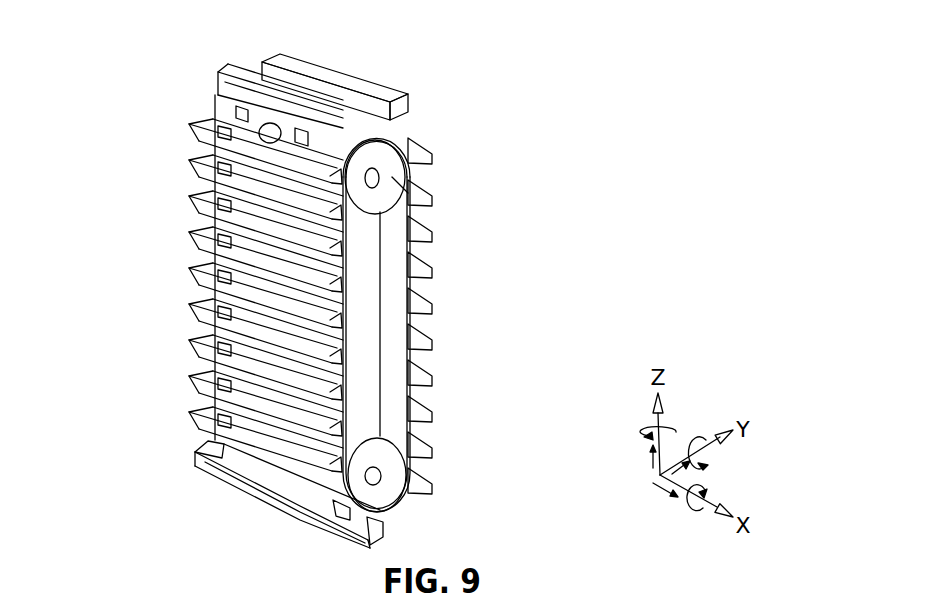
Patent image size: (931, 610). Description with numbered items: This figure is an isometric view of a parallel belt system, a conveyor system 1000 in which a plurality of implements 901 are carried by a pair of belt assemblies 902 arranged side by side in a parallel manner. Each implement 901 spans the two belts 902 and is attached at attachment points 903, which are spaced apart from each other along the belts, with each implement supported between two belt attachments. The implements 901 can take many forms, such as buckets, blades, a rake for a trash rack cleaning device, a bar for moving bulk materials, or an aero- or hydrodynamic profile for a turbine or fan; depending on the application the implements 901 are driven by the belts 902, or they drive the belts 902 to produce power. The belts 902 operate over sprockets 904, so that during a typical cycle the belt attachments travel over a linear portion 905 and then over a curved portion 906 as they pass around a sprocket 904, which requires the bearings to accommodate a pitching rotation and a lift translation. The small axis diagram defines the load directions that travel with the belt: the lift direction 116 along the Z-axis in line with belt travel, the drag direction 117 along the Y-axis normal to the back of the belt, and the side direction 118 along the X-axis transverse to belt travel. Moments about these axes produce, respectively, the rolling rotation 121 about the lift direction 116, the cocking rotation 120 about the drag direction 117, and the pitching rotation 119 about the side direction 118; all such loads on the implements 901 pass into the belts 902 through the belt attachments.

The implement 901 is at (390, 106).
The belt 902 is at (234, 110).
The attachment point 903 is at (327, 243).
The sprocket 904 is at (393, 177).
The linear portion 905 is at (393, 317).
The curved portion 906 is at (406, 143).
The system 1000 is at (275, 603).
The lift direction 116 is at (650, 462).
The drag direction 117 is at (688, 477).
The side direction 118 is at (660, 487).
The pitching rotation 119 is at (703, 488).
The cocking rotation 120 is at (697, 440).
The rolling rotation 121 is at (638, 432).